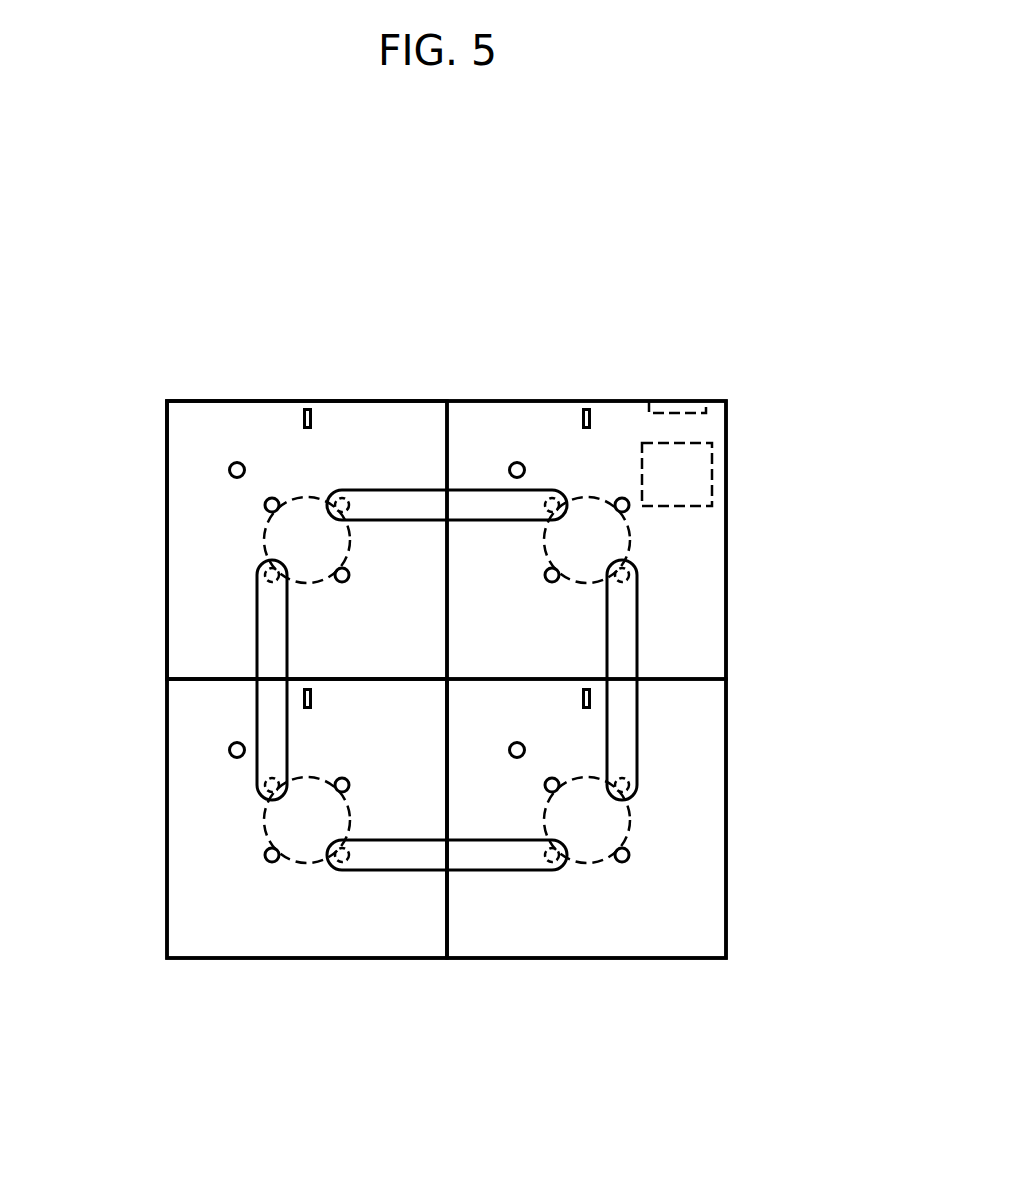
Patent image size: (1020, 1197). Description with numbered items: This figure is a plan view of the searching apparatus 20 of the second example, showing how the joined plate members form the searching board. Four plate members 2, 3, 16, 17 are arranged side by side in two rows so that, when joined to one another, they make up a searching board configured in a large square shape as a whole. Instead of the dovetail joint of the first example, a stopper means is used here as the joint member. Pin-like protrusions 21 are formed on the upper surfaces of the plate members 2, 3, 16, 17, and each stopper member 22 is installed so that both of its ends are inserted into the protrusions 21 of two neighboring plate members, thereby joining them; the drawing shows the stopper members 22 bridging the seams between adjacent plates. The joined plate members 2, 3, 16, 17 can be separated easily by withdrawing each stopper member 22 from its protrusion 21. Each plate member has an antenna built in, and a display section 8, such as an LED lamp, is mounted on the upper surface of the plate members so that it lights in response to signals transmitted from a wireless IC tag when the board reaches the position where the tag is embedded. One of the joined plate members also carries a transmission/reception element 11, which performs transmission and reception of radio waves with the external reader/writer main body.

The flat plate member 2 is at (728, 555).
The flat plate member 3 is at (697, 760).
The display section 8 is at (228, 466).
The transmission/reception element 11 is at (693, 467).
The plate member 16 is at (187, 532).
The plate member 17 is at (193, 838).
The searching apparatus 20 is at (658, 367).
The pin-like protrusion 21 is at (342, 500).
The stopper member 22 is at (387, 504).